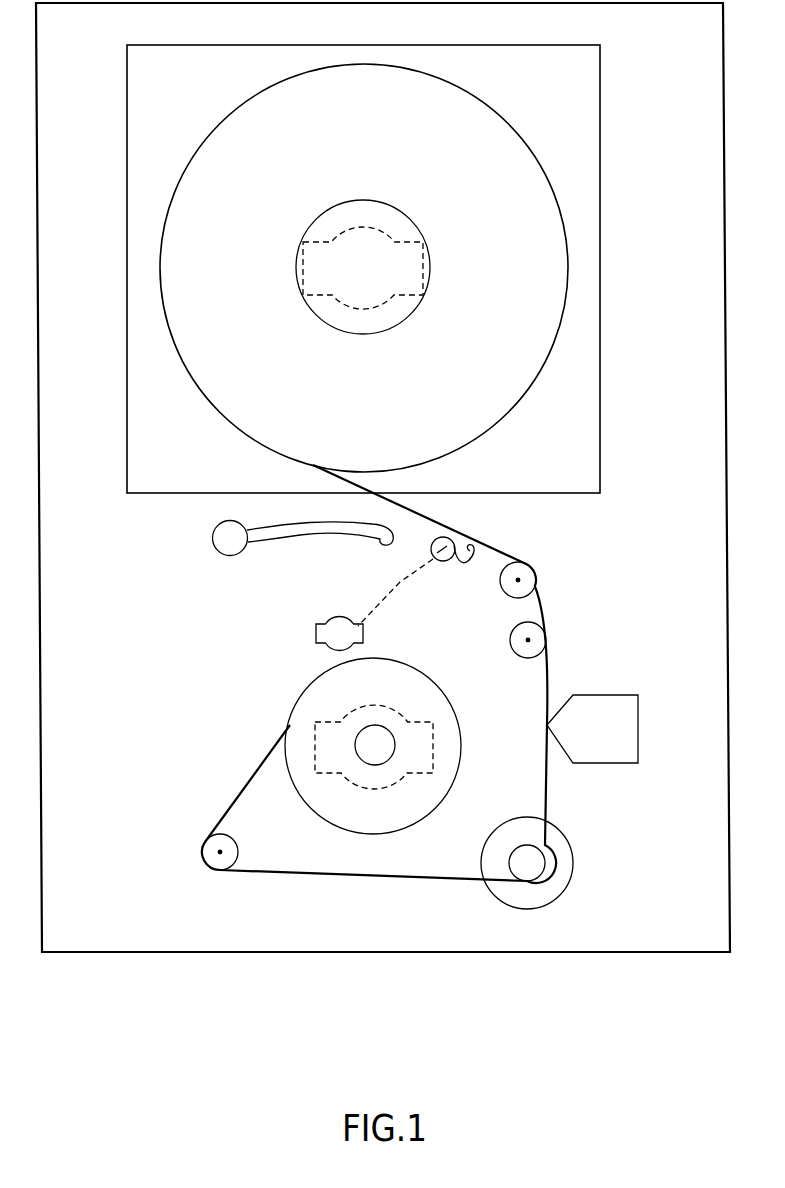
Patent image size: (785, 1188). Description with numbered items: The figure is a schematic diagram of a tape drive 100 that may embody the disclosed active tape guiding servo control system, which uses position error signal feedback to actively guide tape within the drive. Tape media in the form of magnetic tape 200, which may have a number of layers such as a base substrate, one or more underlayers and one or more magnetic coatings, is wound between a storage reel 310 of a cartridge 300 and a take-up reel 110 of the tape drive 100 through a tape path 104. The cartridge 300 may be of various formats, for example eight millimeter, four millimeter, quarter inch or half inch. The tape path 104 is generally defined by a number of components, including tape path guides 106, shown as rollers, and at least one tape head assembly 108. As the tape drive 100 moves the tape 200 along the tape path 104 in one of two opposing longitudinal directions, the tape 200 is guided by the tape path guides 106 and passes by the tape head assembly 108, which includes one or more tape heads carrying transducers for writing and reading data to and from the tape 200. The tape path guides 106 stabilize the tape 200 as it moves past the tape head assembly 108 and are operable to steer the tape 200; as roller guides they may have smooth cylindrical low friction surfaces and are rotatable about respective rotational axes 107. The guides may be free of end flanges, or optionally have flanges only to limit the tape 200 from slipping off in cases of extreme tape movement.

The tape drive 100 is at (330, 953).
The tape path 104 is at (524, 531).
The tape path guides 106 is at (538, 564).
The rotational axes 107 is at (519, 580).
The tape head assembly 108 is at (638, 720).
The take-up reel 110 is at (400, 832).
The magnetic tape 200 is at (328, 470).
The cartridge 300 is at (582, 108).
The storage reel 310 is at (508, 410).